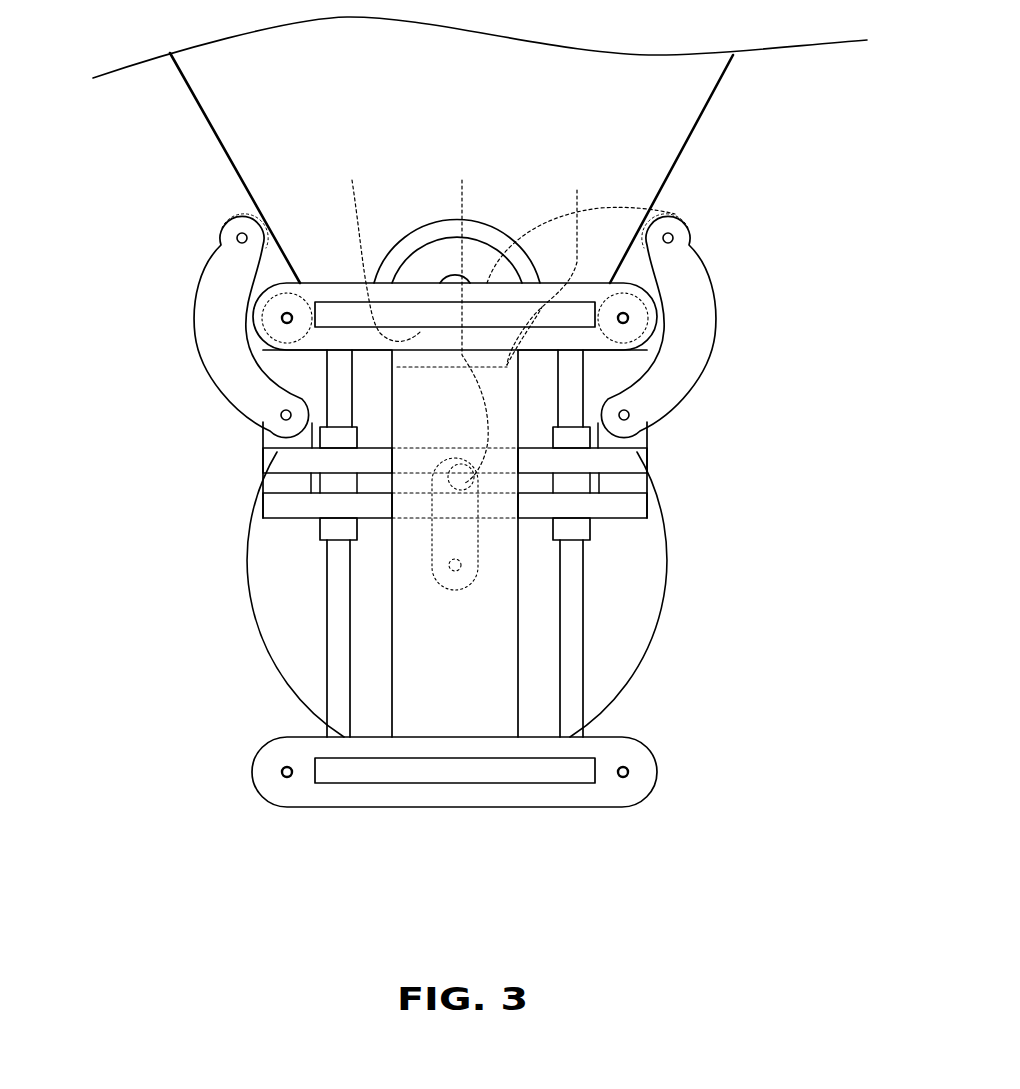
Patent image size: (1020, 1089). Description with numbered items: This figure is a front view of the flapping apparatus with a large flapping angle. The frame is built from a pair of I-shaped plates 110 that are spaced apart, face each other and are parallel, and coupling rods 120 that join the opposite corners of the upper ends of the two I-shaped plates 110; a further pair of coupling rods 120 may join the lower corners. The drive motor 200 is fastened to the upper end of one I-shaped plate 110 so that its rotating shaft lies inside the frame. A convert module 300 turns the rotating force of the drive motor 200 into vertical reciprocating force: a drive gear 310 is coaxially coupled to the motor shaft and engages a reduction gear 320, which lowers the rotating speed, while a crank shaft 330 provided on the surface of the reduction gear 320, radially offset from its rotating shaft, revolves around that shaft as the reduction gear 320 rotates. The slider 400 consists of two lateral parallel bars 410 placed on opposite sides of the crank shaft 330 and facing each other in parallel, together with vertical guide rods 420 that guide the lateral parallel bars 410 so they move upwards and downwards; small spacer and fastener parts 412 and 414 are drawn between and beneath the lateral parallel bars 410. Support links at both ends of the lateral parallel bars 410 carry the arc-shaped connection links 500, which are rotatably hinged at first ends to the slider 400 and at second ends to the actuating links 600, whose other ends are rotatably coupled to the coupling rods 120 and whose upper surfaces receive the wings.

The I-shaped plates 110 is at (453, 717).
The coupling rods 120 is at (275, 318).
The drive motor 200 is at (683, 211).
The convert module 300 is at (459, 332).
The drive gear 310 is at (374, 246).
The reduction gear 320 is at (549, 262).
The crank shaft 330 is at (460, 370).
The slider 400 is at (423, 543).
The lateral parallel bars 410 is at (295, 462).
The spacer 412 is at (628, 482).
The nut 414 is at (577, 527).
The vertical guide rods 420 is at (570, 648).
The connection links 500 is at (217, 358).
The actuating links 600 is at (222, 282).